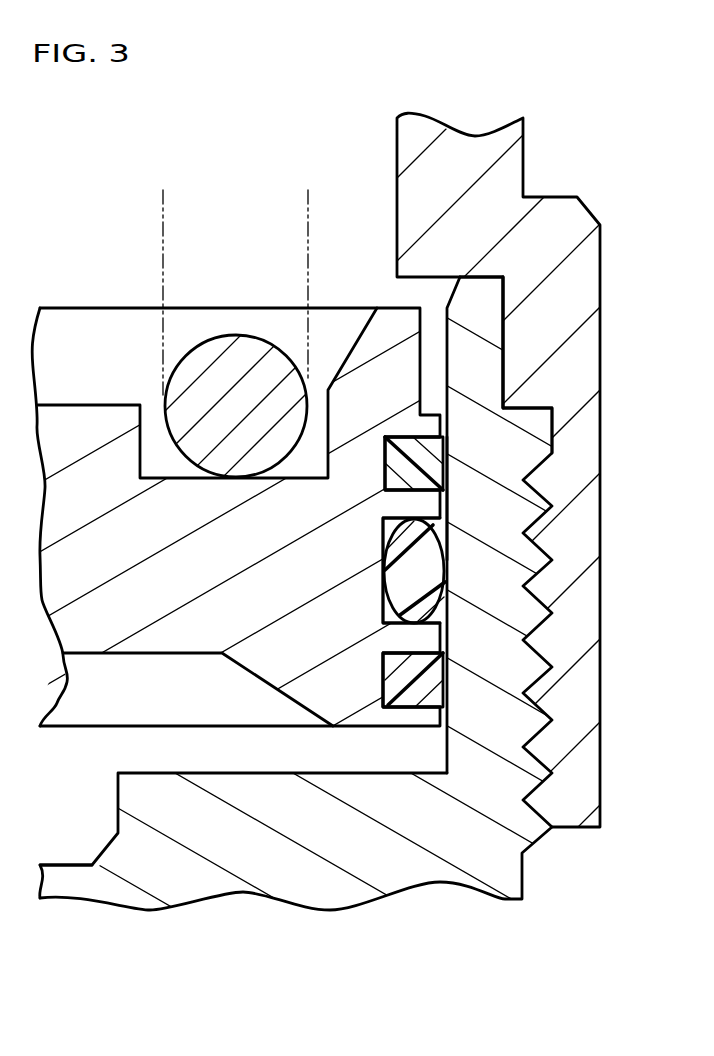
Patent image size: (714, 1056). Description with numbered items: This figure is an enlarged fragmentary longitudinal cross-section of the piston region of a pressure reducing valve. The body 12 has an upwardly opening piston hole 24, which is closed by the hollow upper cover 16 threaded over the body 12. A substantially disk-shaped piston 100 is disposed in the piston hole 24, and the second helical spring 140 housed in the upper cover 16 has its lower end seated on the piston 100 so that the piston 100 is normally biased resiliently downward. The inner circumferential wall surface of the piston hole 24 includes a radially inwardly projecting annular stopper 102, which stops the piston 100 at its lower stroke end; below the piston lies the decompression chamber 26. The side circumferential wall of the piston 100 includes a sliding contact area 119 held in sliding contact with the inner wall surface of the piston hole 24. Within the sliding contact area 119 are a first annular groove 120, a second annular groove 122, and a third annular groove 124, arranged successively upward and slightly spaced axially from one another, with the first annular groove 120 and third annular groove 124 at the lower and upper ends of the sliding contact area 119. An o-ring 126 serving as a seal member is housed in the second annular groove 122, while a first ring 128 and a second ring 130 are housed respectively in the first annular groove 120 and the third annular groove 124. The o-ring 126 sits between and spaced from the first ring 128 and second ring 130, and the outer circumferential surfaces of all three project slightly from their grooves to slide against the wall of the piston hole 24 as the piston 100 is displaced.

The body 12 is at (502, 874).
The upper cover 16 is at (513, 163).
The piston hole 24 is at (445, 357).
The decompression chamber 26 is at (68, 865).
The piston 100 is at (90, 306).
The annular stopper 102 is at (266, 772).
The sliding contact area 119 is at (443, 502).
The first annular groove 120 is at (385, 682).
The second annular groove 122 is at (385, 586).
The third annular groove 124 is at (385, 459).
The o-ring 126 is at (400, 543).
The first ring 128 is at (397, 663).
The second ring 130 is at (410, 445).
The second helical spring 140 is at (232, 355).